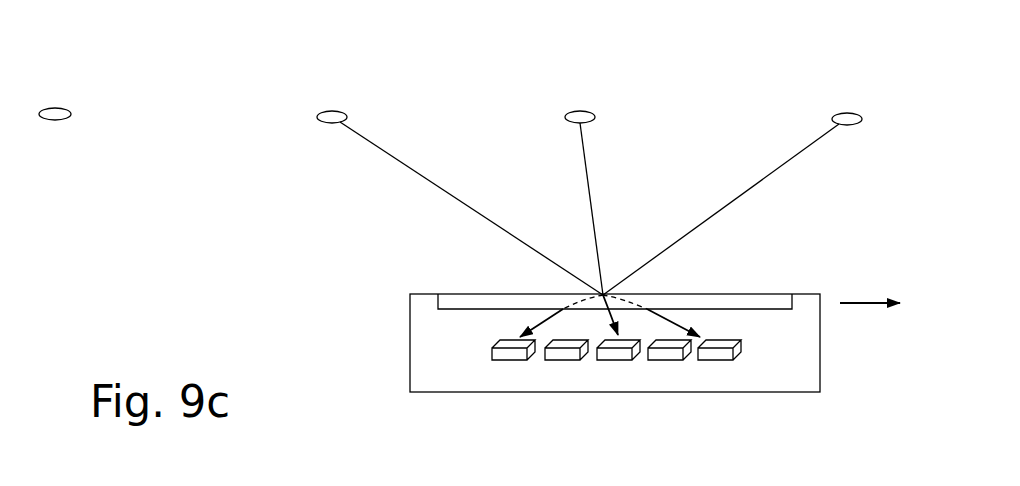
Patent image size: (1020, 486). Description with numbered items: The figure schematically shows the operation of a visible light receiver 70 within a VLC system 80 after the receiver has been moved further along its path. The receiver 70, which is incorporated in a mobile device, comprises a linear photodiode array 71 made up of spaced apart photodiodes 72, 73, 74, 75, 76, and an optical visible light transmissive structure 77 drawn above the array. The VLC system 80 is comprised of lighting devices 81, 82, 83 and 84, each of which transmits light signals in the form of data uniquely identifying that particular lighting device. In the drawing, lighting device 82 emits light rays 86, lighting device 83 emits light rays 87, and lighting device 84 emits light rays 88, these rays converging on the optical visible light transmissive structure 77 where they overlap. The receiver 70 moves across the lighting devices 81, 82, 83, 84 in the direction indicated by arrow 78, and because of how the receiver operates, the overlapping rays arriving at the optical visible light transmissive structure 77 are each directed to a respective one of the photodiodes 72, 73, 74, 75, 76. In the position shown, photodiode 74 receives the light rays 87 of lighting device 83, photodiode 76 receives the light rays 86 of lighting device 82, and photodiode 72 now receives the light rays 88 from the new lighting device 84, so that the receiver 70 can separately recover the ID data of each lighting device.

The visible light receiver 70 is at (803, 358).
The linear photodiode array 71 is at (465, 366).
The photodiode 72 is at (500, 360).
The photodiode 73 is at (550, 360).
The photodiode 74 is at (605, 360).
The photodiode 75 is at (655, 360).
The photodiode 76 is at (705, 360).
The optical visible light transmissive structure 77 is at (450, 305).
The arrow 78 is at (878, 303).
The VLC system 80 is at (206, 90).
The lighting device 81 is at (58, 108).
The lighting device 82 is at (345, 111).
The lighting device 83 is at (580, 111).
The lighting device 84 is at (860, 112).
The light rays 86 is at (422, 177).
The light rays 87 is at (590, 175).
The light rays 88 is at (805, 157).